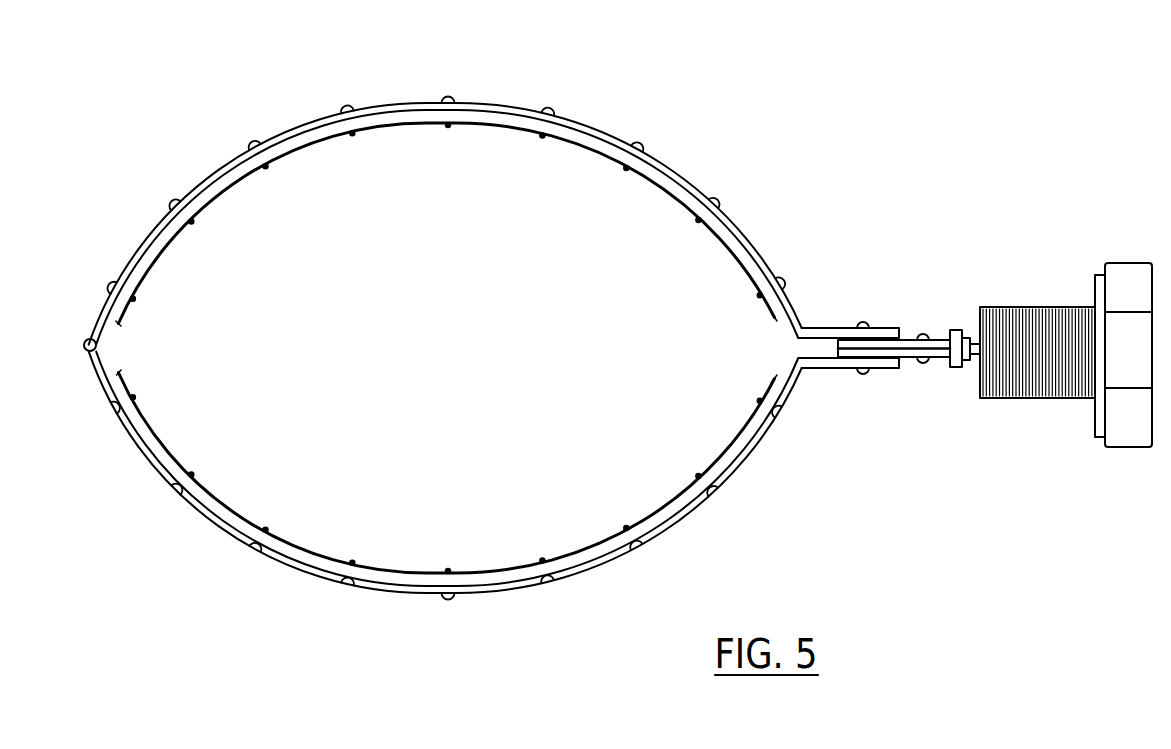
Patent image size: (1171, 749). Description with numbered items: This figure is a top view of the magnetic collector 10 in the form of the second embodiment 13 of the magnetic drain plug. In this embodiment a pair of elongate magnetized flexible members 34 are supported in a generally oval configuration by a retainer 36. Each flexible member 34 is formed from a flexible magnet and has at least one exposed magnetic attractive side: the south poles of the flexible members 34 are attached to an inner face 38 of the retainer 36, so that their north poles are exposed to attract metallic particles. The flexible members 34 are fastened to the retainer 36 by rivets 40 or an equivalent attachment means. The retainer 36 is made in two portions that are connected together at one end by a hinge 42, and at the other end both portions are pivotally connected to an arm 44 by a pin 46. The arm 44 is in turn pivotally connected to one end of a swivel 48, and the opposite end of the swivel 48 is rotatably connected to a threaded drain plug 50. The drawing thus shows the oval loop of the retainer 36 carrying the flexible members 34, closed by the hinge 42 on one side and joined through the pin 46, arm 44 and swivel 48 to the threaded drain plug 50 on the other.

The magnetic collector 10 is at (681, 108).
The second embodiment of the magnetic drain plug 13 is at (776, 472).
The elongate magnetized flexible member 34 is at (150, 268).
The retainer 36 is at (97, 322).
The inner face 38 is at (795, 367).
The rivets 40 is at (256, 146).
The hinge 42 is at (84, 344).
The arm 44 is at (941, 340).
The pin 46 is at (863, 325).
The swivel 48 is at (958, 371).
The threaded drain plug 50 is at (1038, 308).